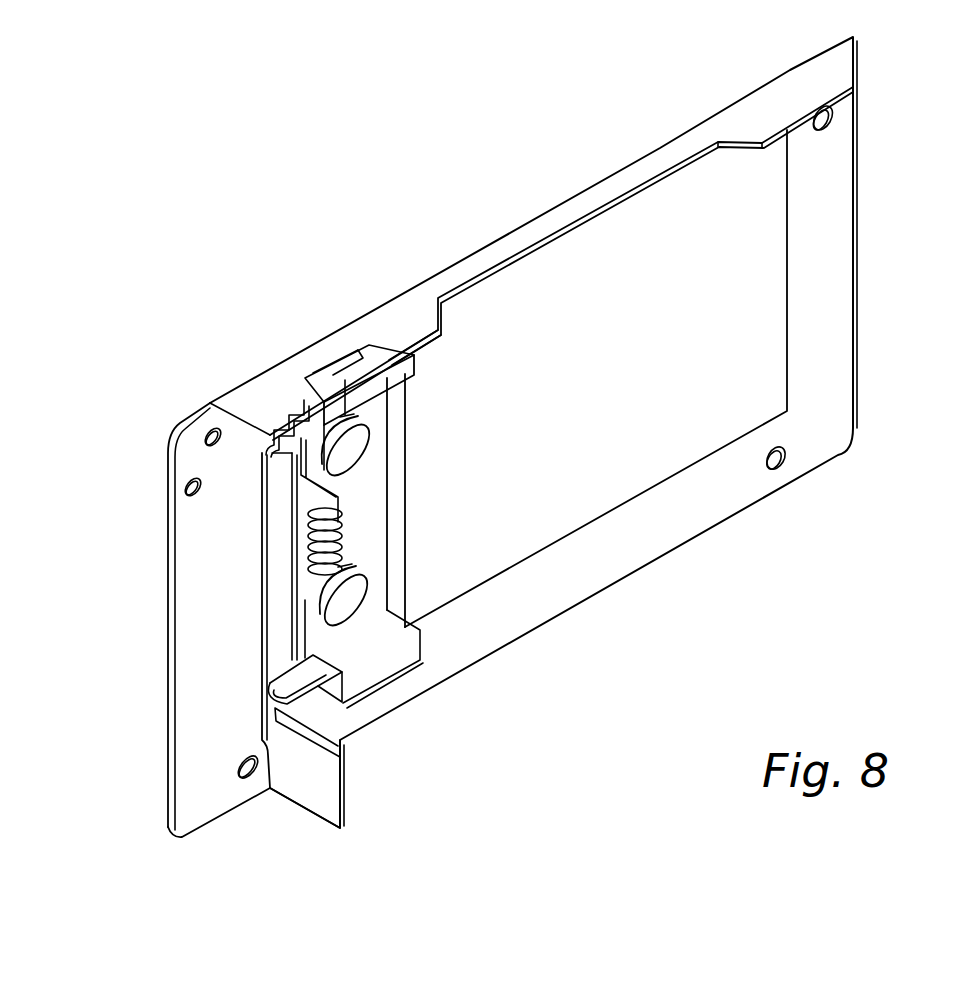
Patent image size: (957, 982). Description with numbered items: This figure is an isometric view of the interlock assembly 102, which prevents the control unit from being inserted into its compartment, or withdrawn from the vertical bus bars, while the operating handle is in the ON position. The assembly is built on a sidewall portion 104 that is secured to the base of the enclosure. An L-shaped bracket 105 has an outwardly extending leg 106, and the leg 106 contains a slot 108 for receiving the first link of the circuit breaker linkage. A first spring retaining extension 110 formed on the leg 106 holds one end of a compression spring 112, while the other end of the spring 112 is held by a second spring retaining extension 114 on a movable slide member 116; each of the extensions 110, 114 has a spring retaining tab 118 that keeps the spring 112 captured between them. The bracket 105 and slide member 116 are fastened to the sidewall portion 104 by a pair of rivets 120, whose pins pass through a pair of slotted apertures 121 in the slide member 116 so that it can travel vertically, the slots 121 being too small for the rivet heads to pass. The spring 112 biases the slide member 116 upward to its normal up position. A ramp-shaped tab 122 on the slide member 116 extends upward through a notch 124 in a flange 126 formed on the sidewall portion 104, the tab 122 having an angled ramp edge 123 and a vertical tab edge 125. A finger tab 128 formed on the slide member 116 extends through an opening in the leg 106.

The interlock assembly 102 is at (434, 107).
The sidewall portion 104 is at (573, 603).
The L-shaped bracket 105 is at (262, 440).
The outwardly extending leg 106 is at (342, 828).
The slot 108 is at (298, 733).
The first spring retaining extension 110 is at (297, 566).
The compression spring 112 is at (302, 534).
The second spring retaining extension 114 is at (310, 500).
The movable slide member 116 is at (370, 687).
The spring retaining tab 118 is at (338, 510).
The rivets 120 is at (365, 453).
The slotted apertures 121 is at (330, 428).
The ramp-shaped tab 122 is at (338, 390).
The angled ramp edge 123 is at (355, 370).
The notch 124 is at (347, 362).
The vertical tab edge 125 is at (278, 418).
The flange 126 is at (415, 313).
The finger tab 128 is at (290, 685).